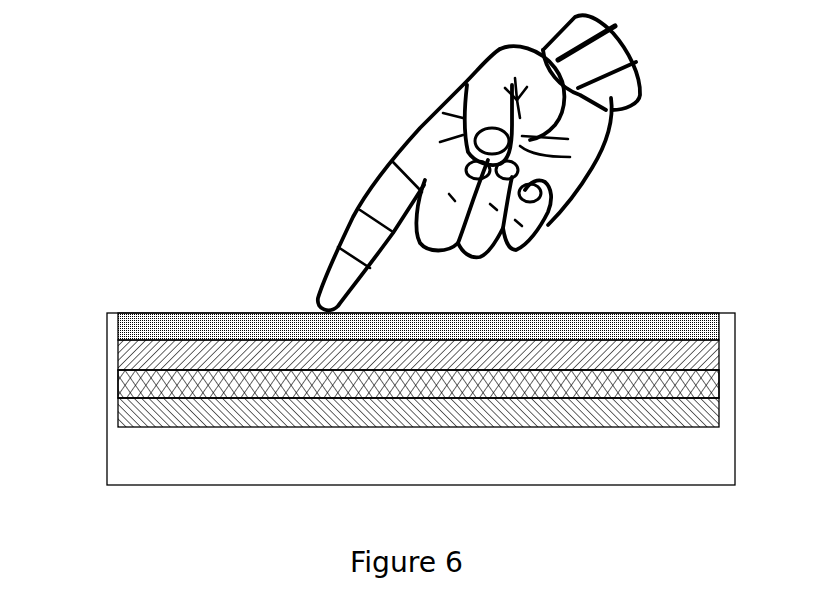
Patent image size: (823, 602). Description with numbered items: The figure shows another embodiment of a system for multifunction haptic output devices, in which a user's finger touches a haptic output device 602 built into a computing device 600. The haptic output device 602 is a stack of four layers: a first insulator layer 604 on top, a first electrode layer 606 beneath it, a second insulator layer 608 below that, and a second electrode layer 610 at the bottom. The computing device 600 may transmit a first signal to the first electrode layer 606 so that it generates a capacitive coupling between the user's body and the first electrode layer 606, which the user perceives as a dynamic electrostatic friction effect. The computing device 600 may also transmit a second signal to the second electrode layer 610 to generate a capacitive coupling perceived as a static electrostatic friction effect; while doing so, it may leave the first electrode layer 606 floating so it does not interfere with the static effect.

The computing device 600 is at (407, 391).
The haptic output device 602 is at (407, 370).
The first insulator layer 604 is at (636, 313).
The first electrode layer 606 is at (118, 357).
The second insulator layer 608 is at (118, 388).
The second electrode layer 610 is at (118, 420).